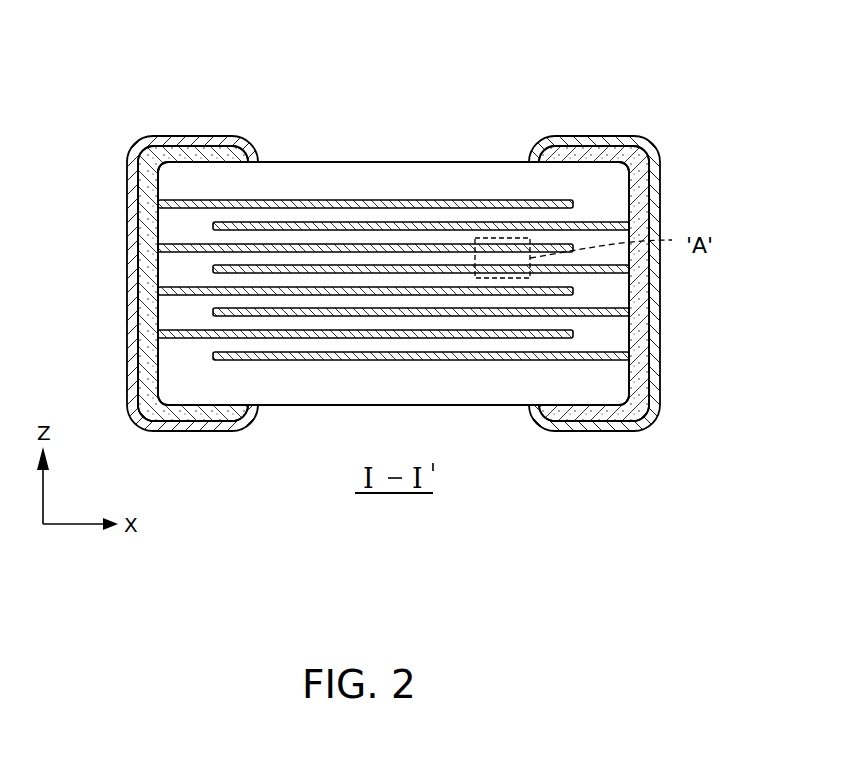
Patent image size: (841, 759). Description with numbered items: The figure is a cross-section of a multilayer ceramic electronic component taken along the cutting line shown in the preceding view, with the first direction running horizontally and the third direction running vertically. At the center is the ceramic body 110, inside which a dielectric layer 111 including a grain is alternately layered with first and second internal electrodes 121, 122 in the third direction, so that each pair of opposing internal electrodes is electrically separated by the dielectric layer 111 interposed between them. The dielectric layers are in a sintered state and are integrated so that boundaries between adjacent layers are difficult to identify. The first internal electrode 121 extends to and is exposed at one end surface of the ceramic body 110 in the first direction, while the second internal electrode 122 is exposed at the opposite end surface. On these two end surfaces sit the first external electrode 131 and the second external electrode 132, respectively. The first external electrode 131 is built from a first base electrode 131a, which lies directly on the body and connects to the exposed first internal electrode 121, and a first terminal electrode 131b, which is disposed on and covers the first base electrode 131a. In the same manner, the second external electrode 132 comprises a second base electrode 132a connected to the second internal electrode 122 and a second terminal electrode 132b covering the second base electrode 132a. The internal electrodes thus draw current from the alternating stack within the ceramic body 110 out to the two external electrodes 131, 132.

The ceramic body 110 is at (395, 162).
The dielectric layer 111 is at (165, 218).
The first internal electrode 121 is at (197, 203).
The second internal electrode 122 is at (215, 232).
The first external electrode 131 is at (194, 235).
The first base electrode 131a is at (163, 147).
The first terminal electrode 131b is at (228, 138).
The second external electrode 132 is at (592, 235).
The second base electrode 132a is at (558, 147).
The second terminal electrode 132b is at (623, 138).